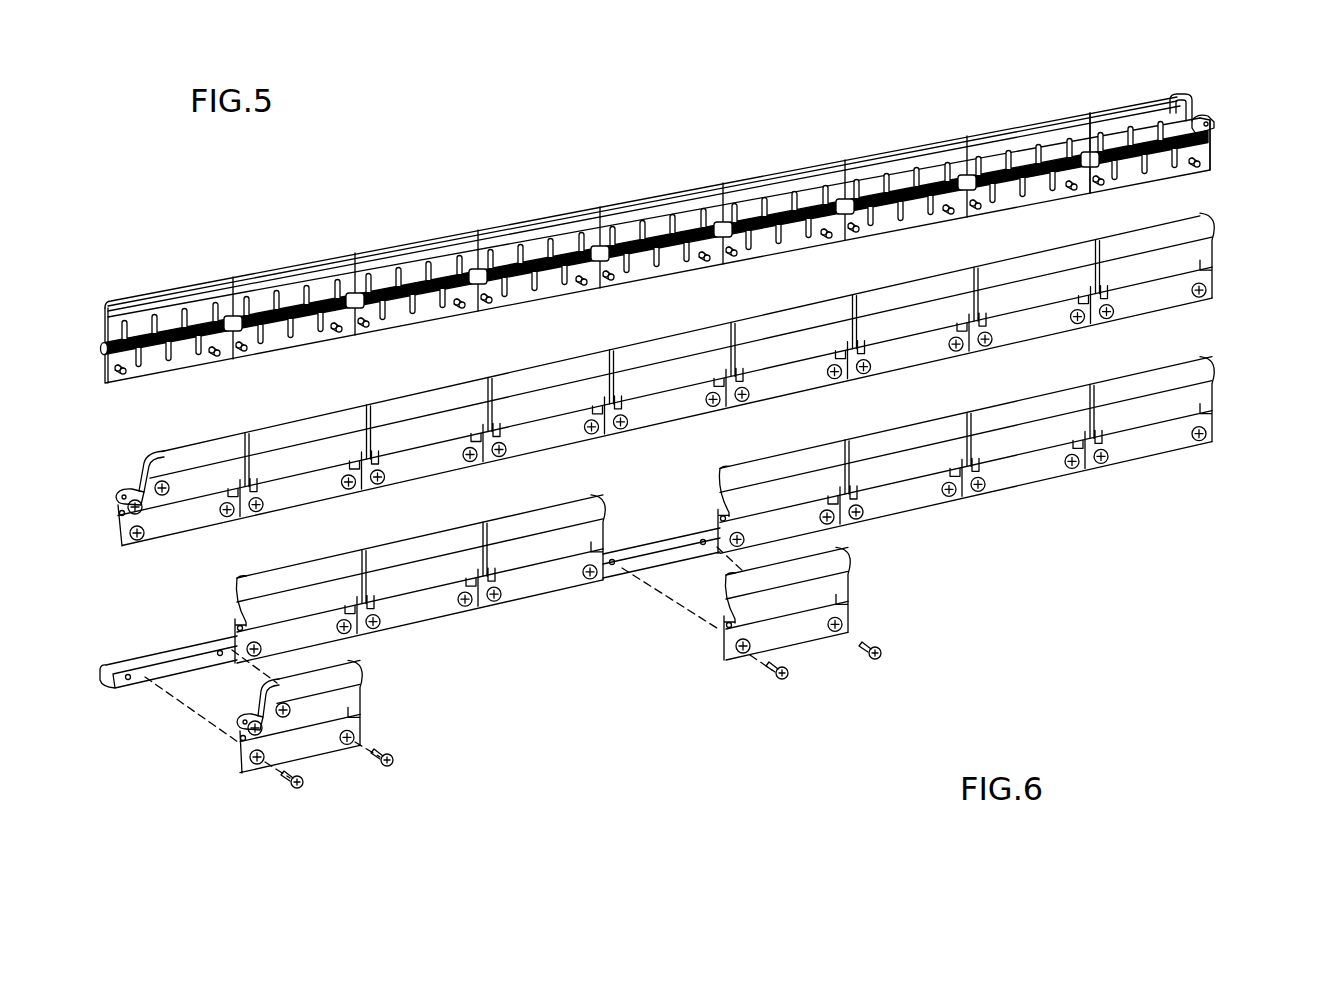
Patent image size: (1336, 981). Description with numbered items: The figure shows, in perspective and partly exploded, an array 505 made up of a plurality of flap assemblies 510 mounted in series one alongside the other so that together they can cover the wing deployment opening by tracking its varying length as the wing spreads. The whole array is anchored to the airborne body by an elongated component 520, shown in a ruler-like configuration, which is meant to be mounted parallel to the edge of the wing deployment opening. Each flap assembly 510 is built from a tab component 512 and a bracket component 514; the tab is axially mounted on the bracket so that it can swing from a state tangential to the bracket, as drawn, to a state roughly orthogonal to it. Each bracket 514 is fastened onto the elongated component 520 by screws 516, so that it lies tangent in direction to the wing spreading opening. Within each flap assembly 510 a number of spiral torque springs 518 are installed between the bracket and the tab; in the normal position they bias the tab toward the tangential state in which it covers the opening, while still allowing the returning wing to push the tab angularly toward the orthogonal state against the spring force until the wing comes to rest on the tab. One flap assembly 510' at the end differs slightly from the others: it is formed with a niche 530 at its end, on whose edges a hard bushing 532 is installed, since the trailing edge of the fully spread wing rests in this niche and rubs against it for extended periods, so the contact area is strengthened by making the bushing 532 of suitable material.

In FIG. 5, the array of flap assemblies 505 is at (594, 176).
In FIG. 6, the array of flap assemblies 505 is at (963, 528).
In FIG. 5, the flap assembly 510 is at (657, 220).
In FIG. 6, the flap assembly 510 is at (666, 438).
In FIG. 5, the end flap assembly 510' is at (1150, 110).
In FIG. 6, the end flap assembly 510' is at (356, 711).
In FIG. 5, the tab component 512 is at (172, 305).
In FIG. 6, the tab component 512 is at (810, 595).
In FIG. 5, the bracket component 514 is at (158, 364).
In FIG. 6, the bracket component 514 is at (792, 638).
In FIG. 6, the screws 516 is at (393, 767).
In FIG. 5, the spiral torque springs 518 is at (152, 323).
In FIG. 6, the elongated component 520 is at (157, 650).
In FIG. 5, the niche 530 is at (1202, 103).
In FIG. 6, the niche 530 is at (131, 471).
In FIG. 5, the hard bushing 532 is at (1213, 122).
In FIG. 6, the hard bushing 532 is at (118, 492).